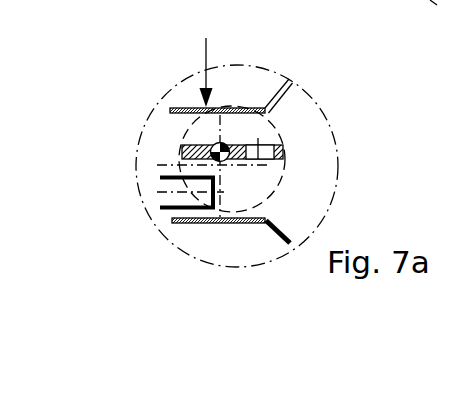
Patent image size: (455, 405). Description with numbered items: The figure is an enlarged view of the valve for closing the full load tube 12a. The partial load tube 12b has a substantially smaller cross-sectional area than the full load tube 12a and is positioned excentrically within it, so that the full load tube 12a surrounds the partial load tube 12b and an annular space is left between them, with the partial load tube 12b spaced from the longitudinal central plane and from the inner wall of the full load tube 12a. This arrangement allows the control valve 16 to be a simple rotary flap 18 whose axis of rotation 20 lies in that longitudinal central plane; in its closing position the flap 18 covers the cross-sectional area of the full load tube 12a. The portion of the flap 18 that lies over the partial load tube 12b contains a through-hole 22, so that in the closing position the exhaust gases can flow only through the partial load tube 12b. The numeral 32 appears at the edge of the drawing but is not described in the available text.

The full load tube 12a is at (288, 78).
The partial load tube 12b is at (163, 184).
The control valve 16 is at (204, 62).
The rotary flap 18 is at (283, 157).
The axis of rotation 20 is at (223, 146).
The through-hole 22 is at (259, 139).
The adjacent element 32 is at (442, 14).